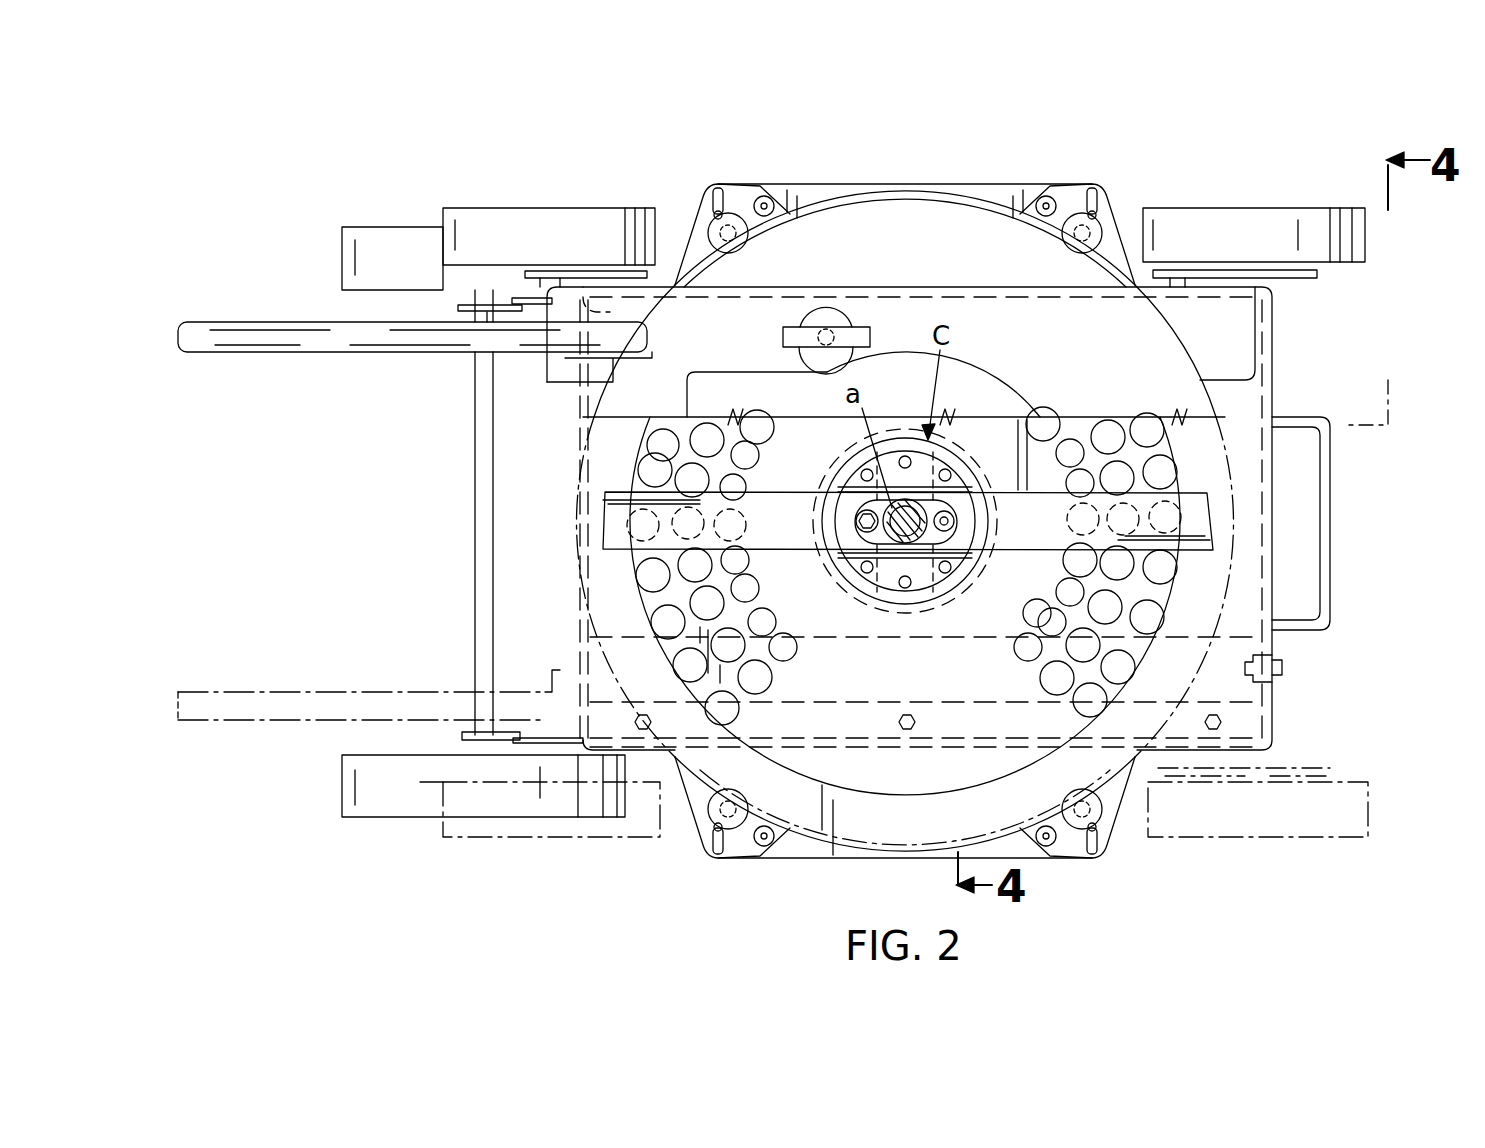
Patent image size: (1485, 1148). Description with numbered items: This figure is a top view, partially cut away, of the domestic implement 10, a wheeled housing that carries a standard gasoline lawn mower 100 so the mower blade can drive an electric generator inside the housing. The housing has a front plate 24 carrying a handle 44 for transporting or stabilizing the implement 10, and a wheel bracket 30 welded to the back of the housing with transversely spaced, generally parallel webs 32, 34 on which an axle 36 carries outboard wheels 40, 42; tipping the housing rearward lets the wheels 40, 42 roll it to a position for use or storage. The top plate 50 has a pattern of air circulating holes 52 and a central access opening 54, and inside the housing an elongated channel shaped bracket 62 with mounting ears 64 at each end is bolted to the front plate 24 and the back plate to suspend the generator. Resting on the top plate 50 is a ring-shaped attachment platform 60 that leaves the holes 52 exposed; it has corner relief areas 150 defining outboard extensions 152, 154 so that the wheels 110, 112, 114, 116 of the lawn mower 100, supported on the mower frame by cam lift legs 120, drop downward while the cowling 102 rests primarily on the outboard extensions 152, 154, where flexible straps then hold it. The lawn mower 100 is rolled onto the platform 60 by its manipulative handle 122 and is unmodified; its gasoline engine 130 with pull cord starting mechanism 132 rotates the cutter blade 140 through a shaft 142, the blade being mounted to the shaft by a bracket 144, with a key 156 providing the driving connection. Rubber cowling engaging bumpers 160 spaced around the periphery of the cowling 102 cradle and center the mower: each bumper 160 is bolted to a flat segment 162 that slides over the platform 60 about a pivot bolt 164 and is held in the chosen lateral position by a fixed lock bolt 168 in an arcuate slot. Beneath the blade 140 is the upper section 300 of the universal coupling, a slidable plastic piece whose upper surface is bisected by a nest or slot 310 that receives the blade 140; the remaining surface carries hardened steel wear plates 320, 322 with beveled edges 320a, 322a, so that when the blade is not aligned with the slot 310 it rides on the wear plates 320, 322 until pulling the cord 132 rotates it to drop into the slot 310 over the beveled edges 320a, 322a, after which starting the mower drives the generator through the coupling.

The domestic implement 10 is at (1288, 688).
The front plate 24 is at (1275, 362).
The wheel bracket 30 is at (583, 412).
The web 32 is at (465, 318).
The web 34 is at (468, 733).
The axle 36 is at (483, 545).
The outboard wheel 40 is at (385, 238).
The outboard wheel 42 is at (385, 805).
The handle 44 is at (1322, 540).
The top plate 50 is at (975, 725).
The air circulating holes 52 is at (745, 590).
The central access opening 54 is at (958, 592).
The attachment platform 60 is at (700, 822).
The channel shaped bracket 62 is at (948, 650).
The mounting ears 64 is at (1285, 668).
The lawn mower 100 is at (928, 170).
The cowling 102 is at (968, 238).
The wheel 110 is at (1305, 218).
The wheel 112 is at (1360, 808).
The wheel 114 is at (493, 832).
The wheel 116 is at (498, 212).
The cam lift legs 120 is at (582, 266).
The manipulative handle 122 is at (260, 345).
The gasoline engine 130 is at (745, 372).
The pull cord starting mechanism 132 is at (855, 330).
The cutter blade 140 is at (608, 528).
The shaft 142 is at (905, 540).
The bracket 144 is at (968, 513).
The corner relief areas 150 is at (690, 230).
The outboard extension 152 is at (865, 520).
The outboard extension 154 is at (835, 190).
The key 156 is at (975, 495).
The rubber cowling engaging bumpers 160 is at (742, 235).
The flat segment 162 is at (728, 192).
The pivot bolt 164 is at (768, 200).
The fixed lock bolt 168 is at (715, 190).
The upper section 300 is at (838, 575).
The nest or slot 310 is at (850, 478).
The wear plate 320 is at (910, 598).
The beveled edge 320a is at (895, 535).
The wear plate 322 is at (908, 425).
The beveled edge 322a is at (875, 498).